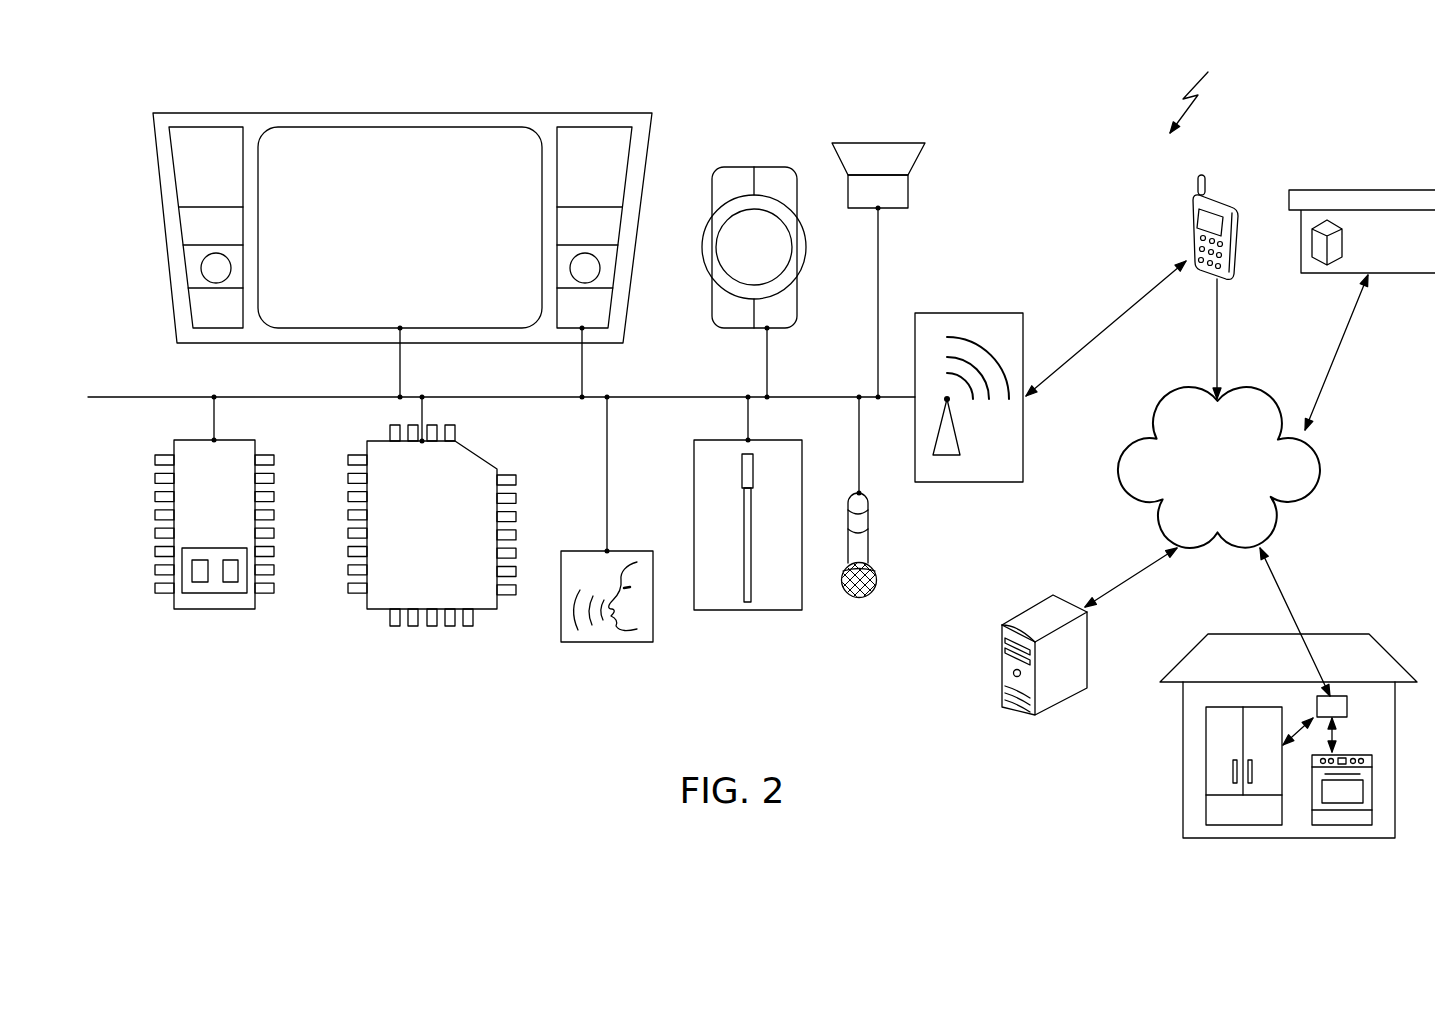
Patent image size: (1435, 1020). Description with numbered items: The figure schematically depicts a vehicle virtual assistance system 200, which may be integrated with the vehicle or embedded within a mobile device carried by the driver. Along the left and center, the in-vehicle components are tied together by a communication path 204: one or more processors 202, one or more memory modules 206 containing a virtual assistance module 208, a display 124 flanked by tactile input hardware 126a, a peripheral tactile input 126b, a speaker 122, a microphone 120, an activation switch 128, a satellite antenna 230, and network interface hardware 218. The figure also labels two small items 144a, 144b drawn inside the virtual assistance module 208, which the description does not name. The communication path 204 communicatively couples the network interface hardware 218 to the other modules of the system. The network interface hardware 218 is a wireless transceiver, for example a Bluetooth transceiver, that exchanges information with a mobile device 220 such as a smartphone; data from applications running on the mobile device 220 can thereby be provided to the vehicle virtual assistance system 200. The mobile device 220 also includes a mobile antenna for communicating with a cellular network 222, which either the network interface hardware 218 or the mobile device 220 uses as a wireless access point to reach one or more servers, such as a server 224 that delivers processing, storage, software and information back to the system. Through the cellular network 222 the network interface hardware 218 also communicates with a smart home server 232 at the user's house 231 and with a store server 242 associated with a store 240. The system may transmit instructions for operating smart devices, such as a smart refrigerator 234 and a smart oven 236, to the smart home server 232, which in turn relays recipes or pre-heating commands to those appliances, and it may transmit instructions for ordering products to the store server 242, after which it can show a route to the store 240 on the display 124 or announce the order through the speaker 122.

The microphone 120 is at (870, 531).
The speaker 122 is at (897, 143).
The display 124 is at (401, 140).
The tactile input hardware 126a is at (231, 268).
The peripheral tactile input 126b is at (740, 167).
The activation switch 128 is at (585, 643).
The first data record 144a is at (192, 569).
The second data record 144b is at (229, 558).
The vehicle virtual assistance system 200 is at (1202, 88).
The processors 202 is at (378, 612).
The communication path 204 is at (122, 400).
The memory modules 206 is at (178, 531).
The virtual assistance module 208 is at (176, 576).
The network interface hardware 218 is at (970, 313).
The mobile device 220 is at (1227, 197).
The cellular network 222 is at (1257, 389).
The server 224 is at (1033, 608).
The satellite antenna 230 is at (748, 612).
The house 231 is at (1269, 714).
The smart home server 232 is at (1337, 696).
The smart refrigerator 234 is at (1205, 770).
The smart oven 236 is at (1345, 827).
The store 240 is at (1362, 282).
The store server 242 is at (1345, 245).